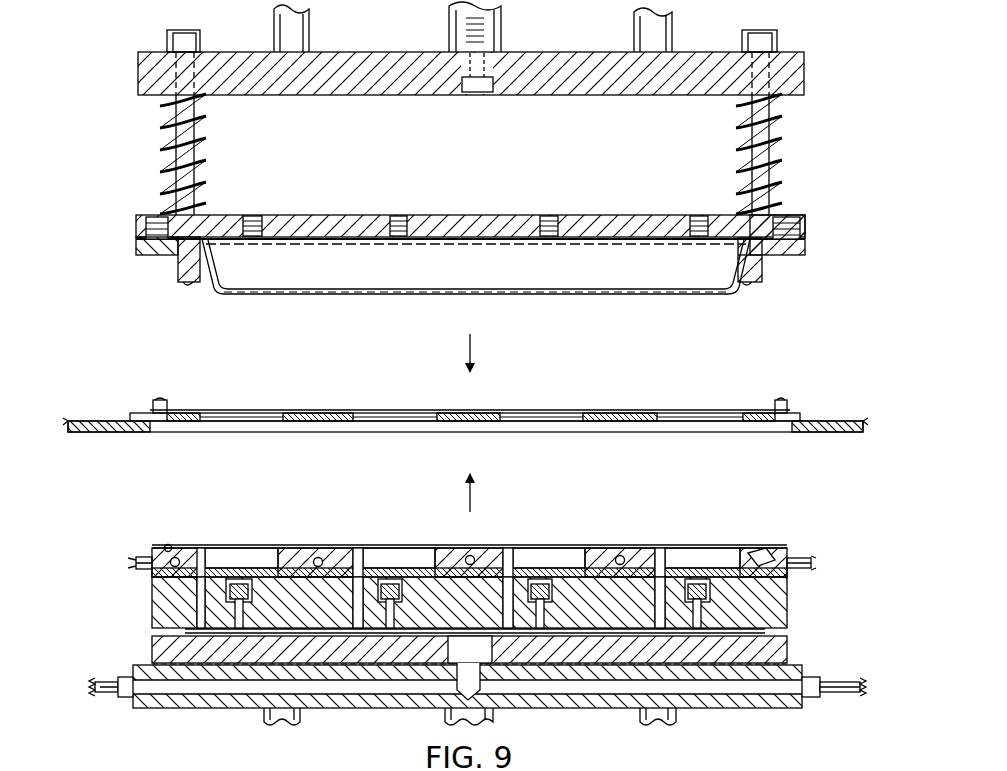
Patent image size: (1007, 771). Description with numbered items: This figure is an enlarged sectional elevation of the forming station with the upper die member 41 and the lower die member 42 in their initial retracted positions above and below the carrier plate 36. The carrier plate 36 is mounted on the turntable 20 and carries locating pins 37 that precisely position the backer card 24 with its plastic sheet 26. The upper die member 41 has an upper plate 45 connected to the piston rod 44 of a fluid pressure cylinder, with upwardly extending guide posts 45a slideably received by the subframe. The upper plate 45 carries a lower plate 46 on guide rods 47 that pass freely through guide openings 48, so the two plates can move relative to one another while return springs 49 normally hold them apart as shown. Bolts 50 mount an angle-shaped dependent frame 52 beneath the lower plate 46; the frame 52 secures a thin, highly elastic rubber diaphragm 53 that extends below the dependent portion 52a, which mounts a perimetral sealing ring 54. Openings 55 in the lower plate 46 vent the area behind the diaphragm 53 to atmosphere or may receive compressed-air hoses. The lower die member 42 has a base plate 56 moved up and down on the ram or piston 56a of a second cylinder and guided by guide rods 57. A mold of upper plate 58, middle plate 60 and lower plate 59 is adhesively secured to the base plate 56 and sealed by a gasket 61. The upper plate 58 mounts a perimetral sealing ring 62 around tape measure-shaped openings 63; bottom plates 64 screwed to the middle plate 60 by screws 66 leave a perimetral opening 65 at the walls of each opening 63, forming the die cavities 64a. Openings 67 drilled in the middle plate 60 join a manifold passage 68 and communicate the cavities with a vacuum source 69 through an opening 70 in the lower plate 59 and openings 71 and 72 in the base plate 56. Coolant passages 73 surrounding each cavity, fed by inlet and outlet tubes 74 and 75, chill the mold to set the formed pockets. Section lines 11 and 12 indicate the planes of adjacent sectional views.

The section line 11- 11 is at (832, 322).
The section line 12- 12 is at (830, 507).
The turntable 20 is at (100, 420).
The backer card 24 is at (620, 412).
The plastic sheet 26 is at (734, 412).
The carrier plate 36 is at (140, 412).
The locating pins 37 is at (166, 404).
The upper die member 41 is at (800, 156).
The lower die member 42 is at (800, 638).
The piston rod 44 is at (502, 23).
The upper plate 45 is at (794, 74).
The guide posts 45a is at (280, 21).
The lower plate 46 is at (466, 214).
The guide rods 47 is at (196, 157).
The guide openings 48 is at (176, 75).
The return springs 49 is at (736, 156).
The bolts 50 is at (779, 216).
The dependent frame 52 is at (806, 230).
The dependent portion 52a is at (760, 269).
The diaphragm 53 is at (390, 295).
The perimetral sealing ring 54 is at (746, 284).
The openings 55 is at (253, 214).
The base plate 56 is at (748, 708).
The ram or piston 56a is at (496, 719).
The guide rods 57 is at (669, 718).
The upper plate 58 is at (450, 558).
The lower plate 59 is at (152, 650).
The middle plate 60 is at (162, 604).
The gasket 61 is at (774, 626).
The perimetral sealing ring 62 is at (168, 545).
The tape measure-shaped openings 63 is at (280, 575).
The bottom plates 64 is at (220, 568).
The die cavities 64a is at (241, 556).
The perimetral opening 65 is at (272, 568).
The screws 66 is at (236, 602).
The openings 67 is at (185, 630).
The manifold passage 68 is at (360, 600).
The vacuum source 69 is at (110, 697).
The opening 70 is at (456, 652).
The opening 71 is at (468, 690).
The opening 72 is at (578, 692).
The coolant passages 73 is at (760, 548).
The inlet tube 74 is at (800, 556).
The outlet tube 75 is at (150, 562).